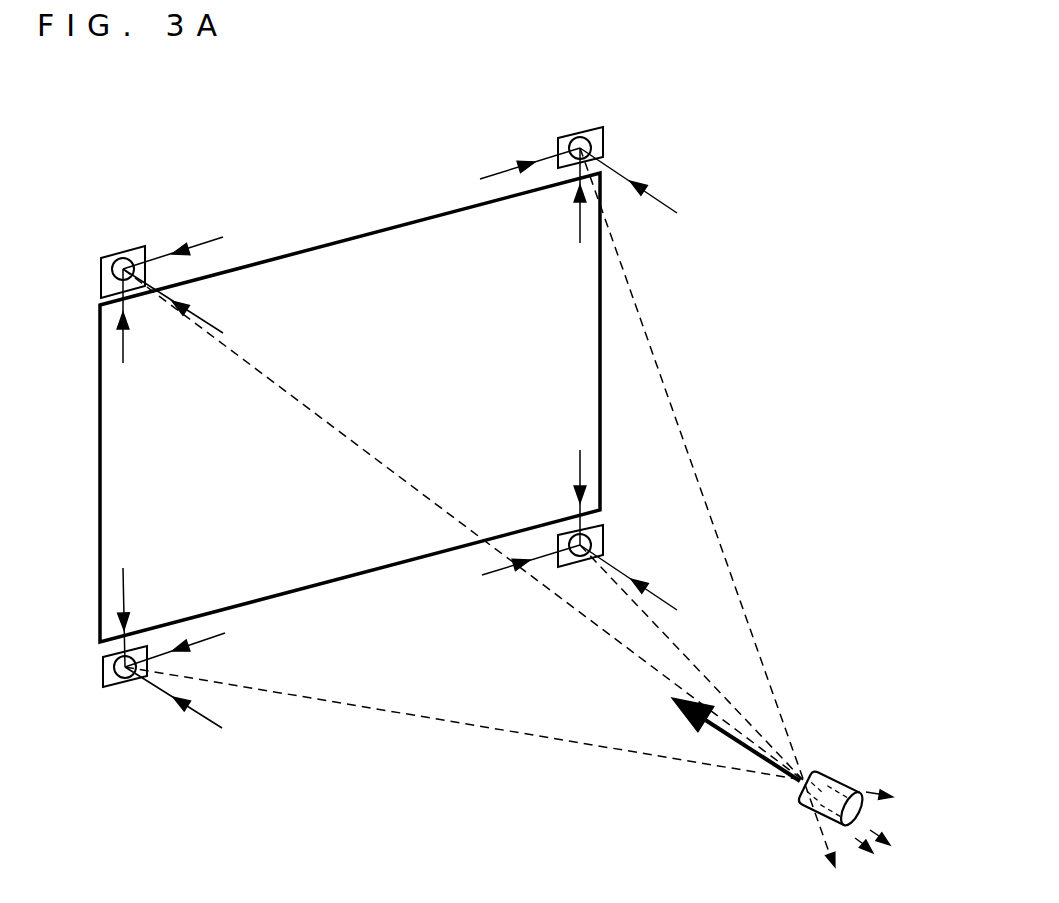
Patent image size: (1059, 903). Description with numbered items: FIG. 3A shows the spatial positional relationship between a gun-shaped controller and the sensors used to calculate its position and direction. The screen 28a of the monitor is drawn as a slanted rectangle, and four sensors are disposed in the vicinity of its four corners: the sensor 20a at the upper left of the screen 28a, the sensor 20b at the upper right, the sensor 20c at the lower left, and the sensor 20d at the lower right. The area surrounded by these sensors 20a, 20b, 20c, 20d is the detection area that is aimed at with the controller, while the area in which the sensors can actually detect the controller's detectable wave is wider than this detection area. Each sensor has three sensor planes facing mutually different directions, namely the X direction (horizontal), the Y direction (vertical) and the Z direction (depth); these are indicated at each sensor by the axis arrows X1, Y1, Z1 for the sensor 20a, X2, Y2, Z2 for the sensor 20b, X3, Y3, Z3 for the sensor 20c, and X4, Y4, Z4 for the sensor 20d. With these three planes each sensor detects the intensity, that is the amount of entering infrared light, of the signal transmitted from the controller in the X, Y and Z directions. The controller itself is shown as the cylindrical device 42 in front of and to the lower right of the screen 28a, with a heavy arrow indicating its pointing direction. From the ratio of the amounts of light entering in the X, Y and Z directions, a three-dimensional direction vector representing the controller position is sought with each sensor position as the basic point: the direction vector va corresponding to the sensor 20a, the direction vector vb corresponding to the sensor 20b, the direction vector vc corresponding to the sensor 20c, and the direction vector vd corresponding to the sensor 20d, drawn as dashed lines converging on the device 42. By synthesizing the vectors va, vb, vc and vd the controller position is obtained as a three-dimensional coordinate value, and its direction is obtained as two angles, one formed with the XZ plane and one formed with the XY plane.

The screen 28a is at (353, 257).
The sensor 20a is at (115, 256).
The sensor 20b is at (597, 127).
The sensor 20c is at (98, 672).
The sensor 20d is at (603, 543).
The pointing device (camera/gun) 42 is at (833, 773).
The X axis of sensor 20a X1 is at (188, 242).
The Y axis of sensor 20a Y1 is at (131, 332).
The Z axis of sensor 20a Z1 is at (189, 301).
The X axis of sensor 20b X2 is at (513, 163).
The Y axis of sensor 20b Y2 is at (567, 210).
The Z axis of sensor 20b Z2 is at (645, 180).
The X axis of sensor 20c X3 is at (197, 650).
The Y axis of sensor 20c Y3 is at (131, 605).
The Z axis of sensor 20c Z3 is at (182, 712).
The X axis of sensor 20d X4 is at (517, 575).
The Y axis of sensor 20d Y4 is at (567, 485).
The Z axis of sensor 20d Z4 is at (645, 577).
The direction vector va is at (570, 606).
The direction vector vb is at (693, 470).
The direction vector vc is at (612, 748).
The direction vector vd is at (695, 663).